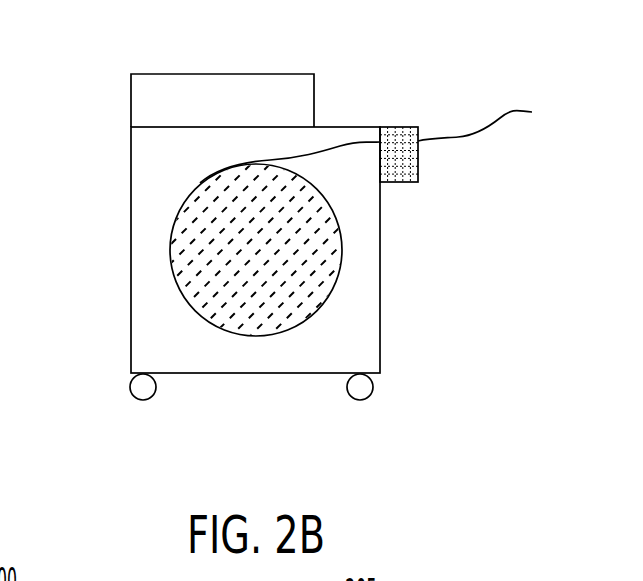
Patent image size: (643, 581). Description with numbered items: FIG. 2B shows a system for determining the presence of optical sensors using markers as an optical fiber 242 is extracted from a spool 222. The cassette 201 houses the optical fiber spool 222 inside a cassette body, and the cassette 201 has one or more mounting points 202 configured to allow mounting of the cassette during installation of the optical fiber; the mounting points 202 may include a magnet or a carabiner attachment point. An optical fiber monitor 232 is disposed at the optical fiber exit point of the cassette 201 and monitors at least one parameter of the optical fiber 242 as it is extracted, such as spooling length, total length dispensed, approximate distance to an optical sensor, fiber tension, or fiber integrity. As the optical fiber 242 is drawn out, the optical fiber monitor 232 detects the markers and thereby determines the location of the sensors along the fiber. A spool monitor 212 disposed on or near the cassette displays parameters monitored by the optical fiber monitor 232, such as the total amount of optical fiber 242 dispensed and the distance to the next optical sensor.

The cassette 201 is at (131, 165).
The mounting points 202 is at (153, 398).
The spool monitor 212 is at (219, 88).
The optical fiber spool 222 is at (170, 248).
The optical fiber monitor 232 is at (399, 133).
The optical fiber 242 is at (500, 115).